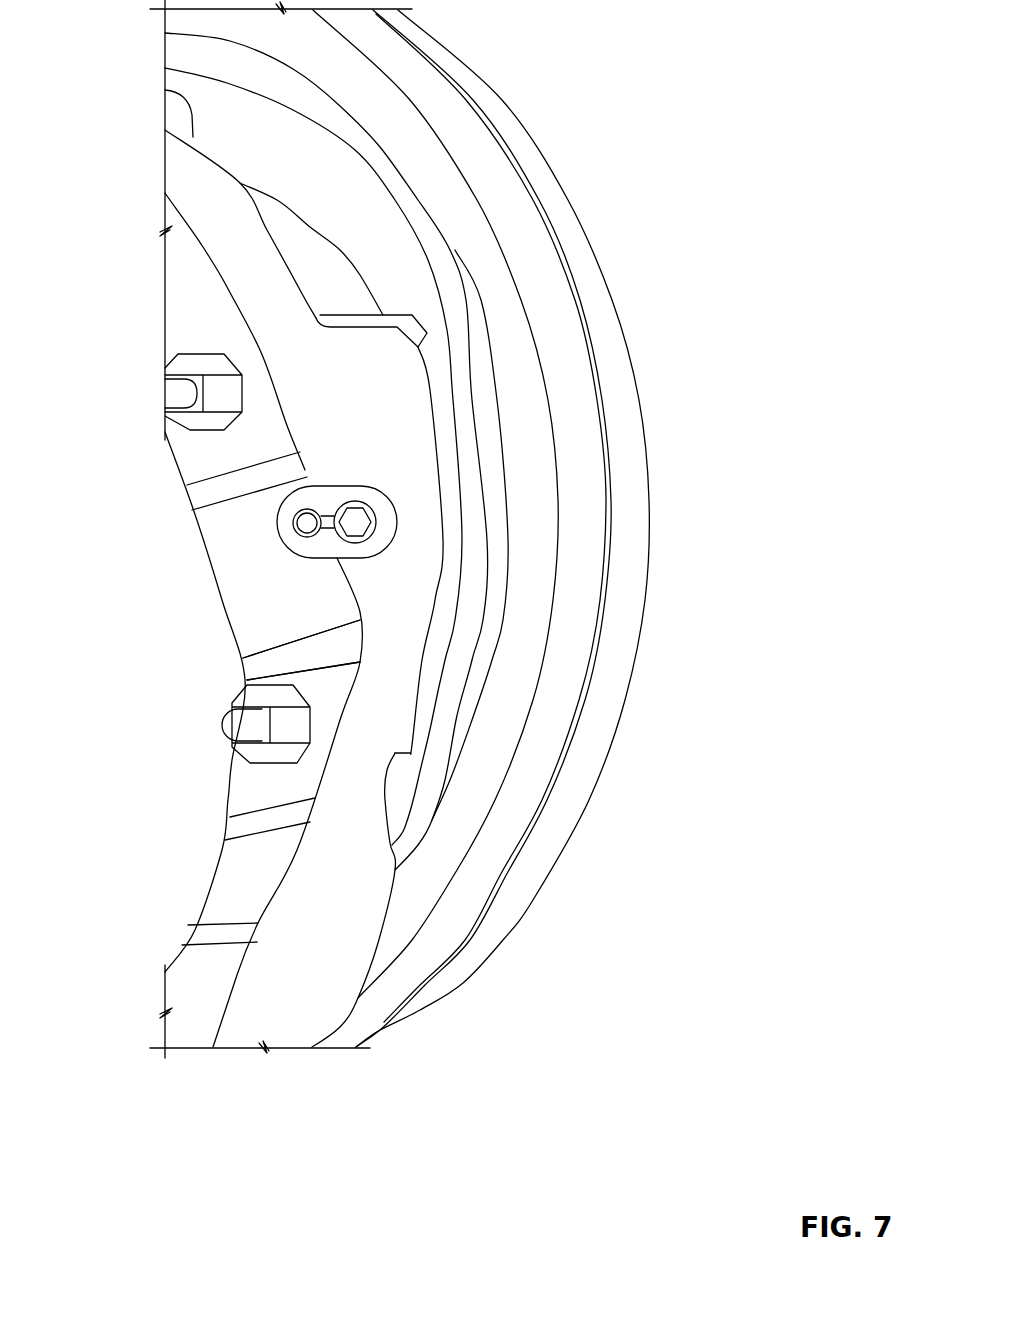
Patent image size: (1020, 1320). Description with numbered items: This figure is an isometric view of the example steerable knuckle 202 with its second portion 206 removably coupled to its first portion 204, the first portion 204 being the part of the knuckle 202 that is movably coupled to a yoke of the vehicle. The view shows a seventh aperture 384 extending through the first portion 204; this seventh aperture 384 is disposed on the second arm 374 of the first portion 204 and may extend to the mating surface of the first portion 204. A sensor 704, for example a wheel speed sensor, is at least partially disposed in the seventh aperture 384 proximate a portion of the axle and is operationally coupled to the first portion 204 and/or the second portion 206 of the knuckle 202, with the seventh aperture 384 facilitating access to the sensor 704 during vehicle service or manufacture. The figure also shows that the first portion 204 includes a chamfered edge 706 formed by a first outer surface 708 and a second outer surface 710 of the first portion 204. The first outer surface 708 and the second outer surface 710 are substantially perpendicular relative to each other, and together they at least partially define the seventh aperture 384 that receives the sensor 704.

The steerable knuckle 202 is at (184, 629).
The first portion 204 is at (183, 103).
The second portion 206 is at (423, 320).
The second arm 374 is at (395, 790).
The seventh aperture 384 is at (350, 490).
The sensor 704 is at (343, 543).
The edge 706 is at (358, 668).
The first outer surface 708 is at (288, 599).
The second outer surface 710 is at (353, 924).